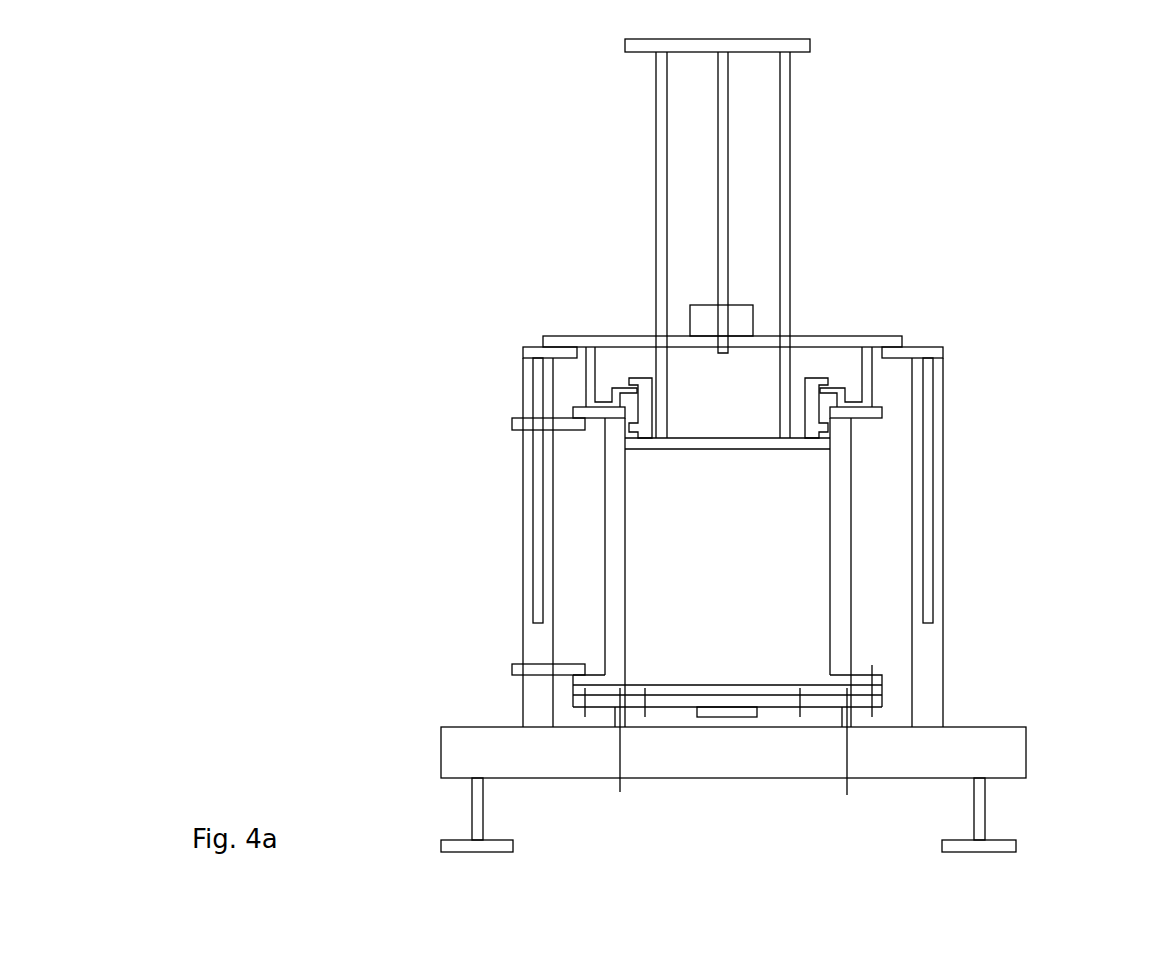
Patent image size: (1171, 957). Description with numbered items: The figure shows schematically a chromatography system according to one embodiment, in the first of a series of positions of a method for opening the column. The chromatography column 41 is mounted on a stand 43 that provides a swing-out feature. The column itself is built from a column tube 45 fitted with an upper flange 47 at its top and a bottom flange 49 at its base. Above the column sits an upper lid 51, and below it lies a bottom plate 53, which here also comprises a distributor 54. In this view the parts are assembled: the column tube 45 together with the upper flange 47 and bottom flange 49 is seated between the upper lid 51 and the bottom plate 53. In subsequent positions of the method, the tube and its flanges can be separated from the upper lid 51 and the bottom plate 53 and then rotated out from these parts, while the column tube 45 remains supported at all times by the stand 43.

The chromatography column 41 is at (892, 531).
The stand 43 is at (1026, 760).
The column tube 45 is at (852, 597).
The upper flange 47 is at (862, 414).
The bottom flange 49 is at (863, 672).
The upper lid 51 is at (840, 336).
The bottom plate 53 is at (880, 703).
The distributor 54 is at (807, 683).